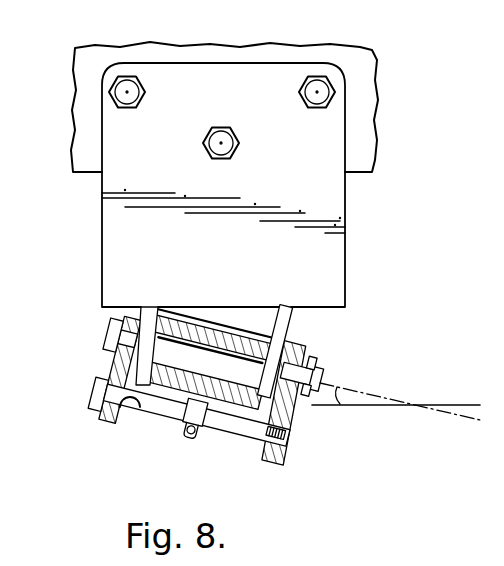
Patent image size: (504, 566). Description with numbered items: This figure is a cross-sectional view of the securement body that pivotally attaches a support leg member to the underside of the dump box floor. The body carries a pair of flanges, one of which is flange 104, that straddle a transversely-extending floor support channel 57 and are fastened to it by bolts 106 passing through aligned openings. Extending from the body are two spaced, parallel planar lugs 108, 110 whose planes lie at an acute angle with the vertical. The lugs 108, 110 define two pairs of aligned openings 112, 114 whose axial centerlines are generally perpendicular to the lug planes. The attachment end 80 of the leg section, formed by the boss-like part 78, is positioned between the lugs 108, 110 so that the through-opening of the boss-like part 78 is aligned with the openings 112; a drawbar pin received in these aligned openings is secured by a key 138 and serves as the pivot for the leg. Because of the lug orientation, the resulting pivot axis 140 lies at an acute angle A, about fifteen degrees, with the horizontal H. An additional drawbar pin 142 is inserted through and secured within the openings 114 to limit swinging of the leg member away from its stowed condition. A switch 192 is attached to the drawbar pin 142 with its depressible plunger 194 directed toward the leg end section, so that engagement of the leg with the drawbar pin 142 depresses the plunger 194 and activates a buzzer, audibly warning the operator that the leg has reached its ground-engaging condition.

The channel member 57 is at (360, 57).
The flange 104 is at (233, 68).
The bolts 106 is at (300, 92).
The boss-like part 78 is at (252, 325).
The attachment end 80 is at (220, 325).
The lug 108 is at (104, 424).
The lug 110 is at (275, 462).
The openings 112 is at (142, 312).
The openings 114 is at (140, 408).
The key 138 is at (318, 364).
The pivot axis 140 is at (462, 414).
The drawbar pin 142 is at (96, 389).
The switch 192 is at (206, 432).
The plunger 194 is at (192, 438).
The horizontal H is at (455, 404).
The acute angle A is at (334, 392).